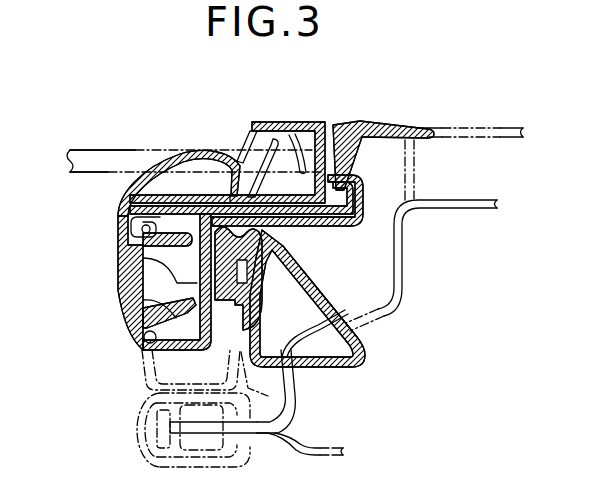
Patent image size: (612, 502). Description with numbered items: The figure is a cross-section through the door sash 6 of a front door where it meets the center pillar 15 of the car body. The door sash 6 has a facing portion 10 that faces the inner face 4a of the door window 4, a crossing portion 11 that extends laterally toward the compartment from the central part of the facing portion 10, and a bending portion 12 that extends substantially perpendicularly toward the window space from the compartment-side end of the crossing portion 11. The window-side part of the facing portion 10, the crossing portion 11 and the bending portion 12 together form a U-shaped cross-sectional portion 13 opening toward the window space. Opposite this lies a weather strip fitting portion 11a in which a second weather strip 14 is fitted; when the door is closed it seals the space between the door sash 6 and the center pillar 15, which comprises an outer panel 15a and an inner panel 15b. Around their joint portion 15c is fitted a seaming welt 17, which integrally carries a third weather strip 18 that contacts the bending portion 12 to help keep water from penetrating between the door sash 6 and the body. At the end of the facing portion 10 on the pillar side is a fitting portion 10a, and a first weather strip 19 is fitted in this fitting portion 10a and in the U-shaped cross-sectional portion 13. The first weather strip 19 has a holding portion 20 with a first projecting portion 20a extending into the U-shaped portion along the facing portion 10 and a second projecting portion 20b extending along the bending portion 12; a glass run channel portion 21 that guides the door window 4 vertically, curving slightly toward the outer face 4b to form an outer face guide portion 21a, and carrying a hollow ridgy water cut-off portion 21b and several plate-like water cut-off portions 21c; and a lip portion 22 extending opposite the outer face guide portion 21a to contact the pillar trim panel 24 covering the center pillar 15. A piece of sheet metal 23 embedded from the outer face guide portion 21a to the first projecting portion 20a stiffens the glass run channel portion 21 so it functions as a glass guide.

The door window 4 is at (122, 148).
The inner face of the door window 4a is at (97, 173).
The outer face of the door window 4b is at (88, 148).
The door sash 6 is at (197, 278).
The facing portion 10 is at (200, 195).
The fitting portion 10a is at (360, 196).
The crossing portion 11 is at (187, 308).
The weather strip fitting portion 11a is at (260, 320).
The bending portion 12 is at (180, 358).
The U-shaped cross-sectional portion 13 is at (168, 283).
The second weather strip 14 is at (390, 282).
The center pillar 15 is at (320, 290).
The outer panel 15a is at (379, 308).
The inner panel 15b is at (324, 448).
The joint portion 15c is at (256, 440).
The seaming welt 17 is at (150, 457).
The third weather strip 18 is at (143, 382).
The first weather strip 19 is at (119, 230).
The holding portion 20 is at (123, 277).
The first projecting portion 20a is at (145, 265).
The second projecting portion 20b is at (155, 337).
The glass run channel portion 21 is at (293, 120).
The outer face guide portion 21a is at (276, 128).
The hollow and ridgy water cut-off portion 21b is at (215, 193).
The projecting/plate-like water cut-off portions 21c is at (252, 150).
The lip portion 22 is at (363, 127).
The sheet metal 23 is at (170, 193).
The pillar trim panel 24 is at (488, 127).